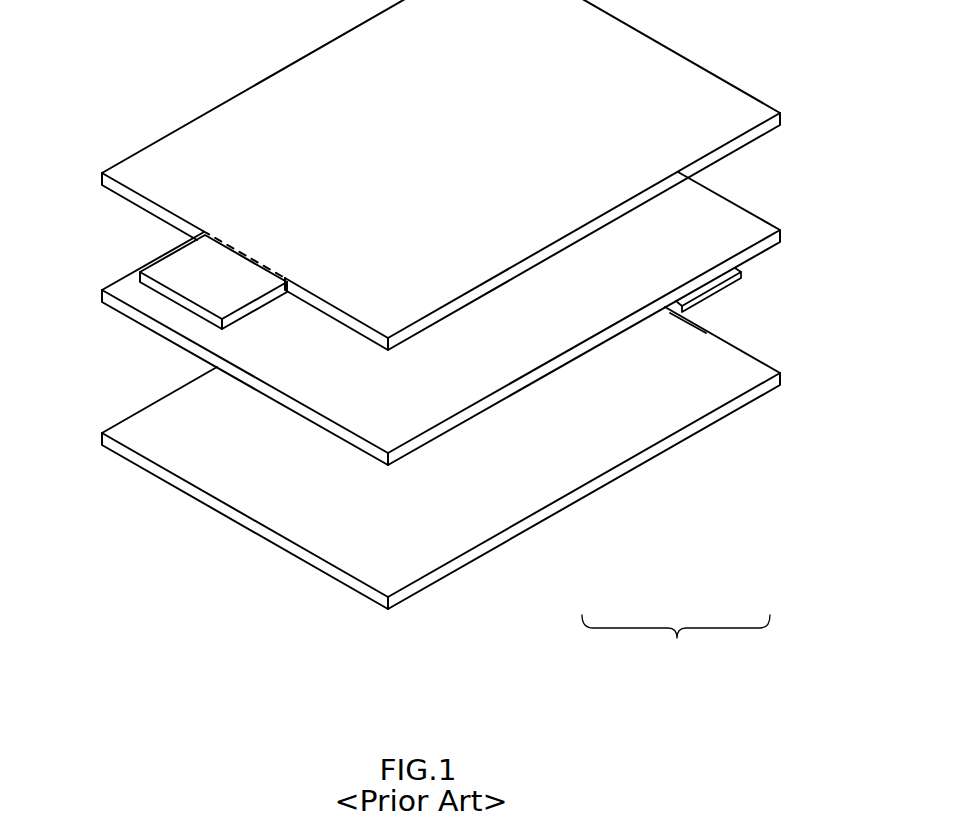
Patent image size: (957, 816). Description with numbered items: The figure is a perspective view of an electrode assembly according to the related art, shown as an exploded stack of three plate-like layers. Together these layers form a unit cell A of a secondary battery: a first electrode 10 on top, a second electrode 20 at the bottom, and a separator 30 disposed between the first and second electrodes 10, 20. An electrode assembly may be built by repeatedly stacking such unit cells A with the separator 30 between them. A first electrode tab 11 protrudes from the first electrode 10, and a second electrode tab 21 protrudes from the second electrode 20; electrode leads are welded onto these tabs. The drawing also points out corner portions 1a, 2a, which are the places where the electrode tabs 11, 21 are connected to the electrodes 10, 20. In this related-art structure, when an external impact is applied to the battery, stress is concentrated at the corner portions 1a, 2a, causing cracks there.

The first electrode 10 is at (510, 273).
The corner portion 1a is at (202, 231).
The separator 30 is at (598, 340).
The first electrode tab 11 is at (173, 292).
The second electrode tab 21 is at (745, 282).
The second electrode 20 is at (725, 400).
The corner portion 2a is at (685, 308).
The unit cell A is at (676, 646).